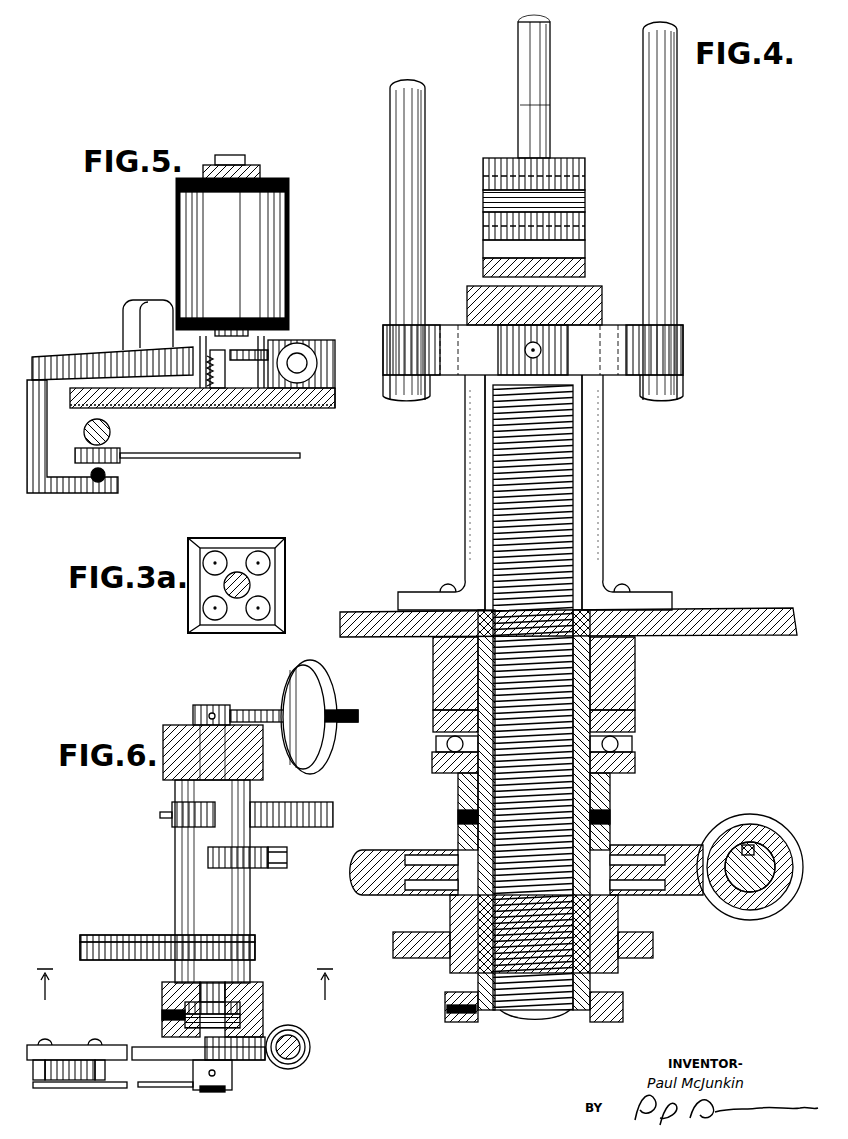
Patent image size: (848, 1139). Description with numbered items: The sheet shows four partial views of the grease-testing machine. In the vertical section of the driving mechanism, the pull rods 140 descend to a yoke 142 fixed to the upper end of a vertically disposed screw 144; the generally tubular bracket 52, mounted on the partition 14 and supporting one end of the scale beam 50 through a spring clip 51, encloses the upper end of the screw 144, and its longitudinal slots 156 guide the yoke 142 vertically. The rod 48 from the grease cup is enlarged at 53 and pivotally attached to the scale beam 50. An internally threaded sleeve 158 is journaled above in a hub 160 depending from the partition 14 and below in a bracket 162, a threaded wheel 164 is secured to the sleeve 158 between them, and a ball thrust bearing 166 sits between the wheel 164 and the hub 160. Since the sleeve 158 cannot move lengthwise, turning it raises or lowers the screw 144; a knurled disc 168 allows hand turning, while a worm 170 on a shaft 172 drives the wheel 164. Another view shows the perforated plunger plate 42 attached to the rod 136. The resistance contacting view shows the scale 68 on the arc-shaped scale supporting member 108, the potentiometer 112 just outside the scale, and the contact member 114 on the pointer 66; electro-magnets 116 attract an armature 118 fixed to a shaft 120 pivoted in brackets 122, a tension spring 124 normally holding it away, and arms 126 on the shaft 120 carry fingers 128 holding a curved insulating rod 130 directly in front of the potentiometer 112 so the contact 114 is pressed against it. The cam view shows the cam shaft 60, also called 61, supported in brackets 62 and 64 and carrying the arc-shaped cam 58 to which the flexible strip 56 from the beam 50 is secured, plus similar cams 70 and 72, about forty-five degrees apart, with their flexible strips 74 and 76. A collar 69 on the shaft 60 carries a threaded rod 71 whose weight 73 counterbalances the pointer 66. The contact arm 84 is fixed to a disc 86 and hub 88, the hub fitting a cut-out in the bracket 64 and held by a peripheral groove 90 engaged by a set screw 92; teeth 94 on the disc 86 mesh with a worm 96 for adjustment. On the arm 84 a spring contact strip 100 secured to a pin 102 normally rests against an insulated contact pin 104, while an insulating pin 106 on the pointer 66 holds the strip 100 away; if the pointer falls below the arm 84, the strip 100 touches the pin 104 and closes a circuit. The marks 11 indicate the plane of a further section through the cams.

In FIG. 4, the partition 14 is at (735, 598).
In FIG. 4, the rod 48 is at (543, 93).
In FIG. 4, the scale beam 50 is at (585, 266).
In FIG. 4, the spring clip 51 is at (585, 232).
In FIG. 4, the bracket 52 is at (603, 462).
In FIG. 4, the enlarged lower end of rod 53 is at (585, 168).
In FIG. 4, the pull rods 140 is at (425, 133).
In FIG. 4, the yoke 142 is at (608, 336).
In FIG. 4, the screw 144 is at (493, 483).
In FIG. 4, the longitudinal slots 156 is at (462, 518).
In FIG. 4, the internally threaded sleeve 158 is at (590, 790).
In FIG. 4, the hub 160 is at (635, 683).
In FIG. 4, the bracket 162 is at (653, 945).
In FIG. 4, the threaded wheel 164 is at (680, 860).
In FIG. 4, the antifriction thrust bearing 166 is at (635, 728).
In FIG. 4, the knurled disc 168 is at (623, 1005).
In FIG. 4, the worm 170 is at (762, 840).
In FIG. 4, the worm shaft 172 is at (770, 848).
In FIG. 5, the electro-magnets 116 is at (283, 262).
In FIG. 5, the armature 118 is at (230, 372).
In FIG. 5, the shaft 120 is at (298, 352).
In FIG. 5, the brackets 122 is at (335, 360).
In FIG. 5, the tension spring 124 is at (210, 352).
In FIG. 5, the arms 126 is at (110, 352).
In FIG. 5, the fingers 128 is at (65, 493).
In FIG. 5, the curved rod 130 is at (105, 475).
In FIG. 5, the potentiometer 112 is at (110, 432).
In FIG. 5, the contact member 114 is at (120, 452).
In FIG. 5, the scale 68 is at (192, 410).
In FIG. 5, the scale supporting member 108 is at (312, 410).
In FIG. 3A, the perforated plunger plate 42 is at (285, 570).
In FIG. 3A, the rod 136 is at (250, 588).
In FIG. 6, the cam shaft 60 is at (250, 915).
In FIG. 6, the cam shaft 61 is at (225, 990).
In FIG. 6, the bracket 62 is at (255, 756).
In FIG. 6, the bracket 64 is at (263, 1000).
In FIG. 6, the pointer 66 is at (155, 1087).
In FIG. 6, the collar 69 is at (193, 712).
In FIG. 6, the cam 70 is at (208, 850).
In FIG. 6, the threaded rod 71 is at (265, 710).
In FIG. 6, the cam 72 is at (300, 808).
In FIG. 6, the weight 73 is at (325, 680).
In FIG. 6, the flexible strip 74 is at (280, 860).
In FIG. 6, the flexible strip 76 is at (160, 815).
In FIG. 6, the flexible strip 56 is at (128, 948).
In FIG. 6, the cam 58 is at (108, 935).
In FIG. 6, the contact arm 84 is at (115, 1045).
In FIG. 6, the disc 86 is at (160, 1047).
In FIG. 6, the hub 88 is at (240, 1020).
In FIG. 6, the peripheral groove 90 is at (240, 1008).
In FIG. 6, the set screw 92 is at (162, 1015).
In FIG. 6, the teeth 94 is at (232, 1068).
In FIG. 6, the worm 96 is at (305, 1040).
In FIG. 6, the spring contact strip 100 is at (68, 1060).
In FIG. 6, the pin 102 is at (45, 1039).
In FIG. 6, the contact pin 104 is at (95, 1039).
In FIG. 6, the pin 106 is at (68, 1088).
In FIG. 6, the section line 11 is at (187, 975).